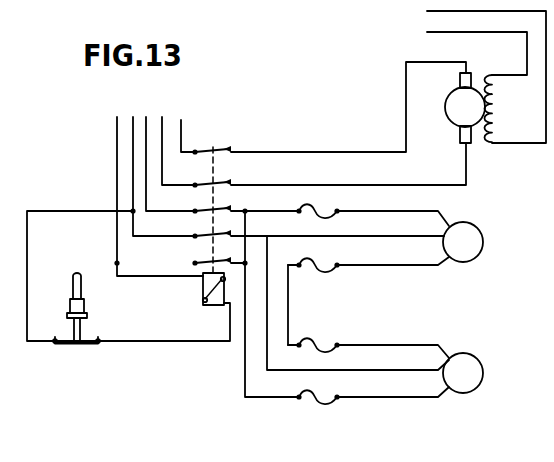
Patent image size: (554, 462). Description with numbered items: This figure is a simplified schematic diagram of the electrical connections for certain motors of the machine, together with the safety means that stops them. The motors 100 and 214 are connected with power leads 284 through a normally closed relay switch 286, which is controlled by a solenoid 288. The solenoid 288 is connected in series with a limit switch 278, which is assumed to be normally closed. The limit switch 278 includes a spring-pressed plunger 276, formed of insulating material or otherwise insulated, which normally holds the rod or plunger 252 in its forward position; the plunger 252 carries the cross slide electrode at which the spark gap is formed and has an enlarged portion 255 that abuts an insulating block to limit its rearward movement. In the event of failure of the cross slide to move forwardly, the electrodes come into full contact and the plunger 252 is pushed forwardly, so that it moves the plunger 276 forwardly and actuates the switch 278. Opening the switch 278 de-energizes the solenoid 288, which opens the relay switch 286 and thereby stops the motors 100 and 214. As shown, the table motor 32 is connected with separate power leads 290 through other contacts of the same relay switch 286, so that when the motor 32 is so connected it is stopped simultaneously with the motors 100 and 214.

The table motor 32 is at (446, 102).
The motor 100 is at (483, 242).
The motor 214 is at (483, 372).
The rod 252 is at (80, 290).
The enlarged portion 255 is at (84, 308).
The spring-pressed plunger 276 is at (73, 326).
The limit switch 278 is at (92, 340).
The power leads 284 is at (117, 141).
The relay switch 286 is at (212, 193).
The solenoid 288 is at (203, 292).
The power leads 290 is at (181, 135).